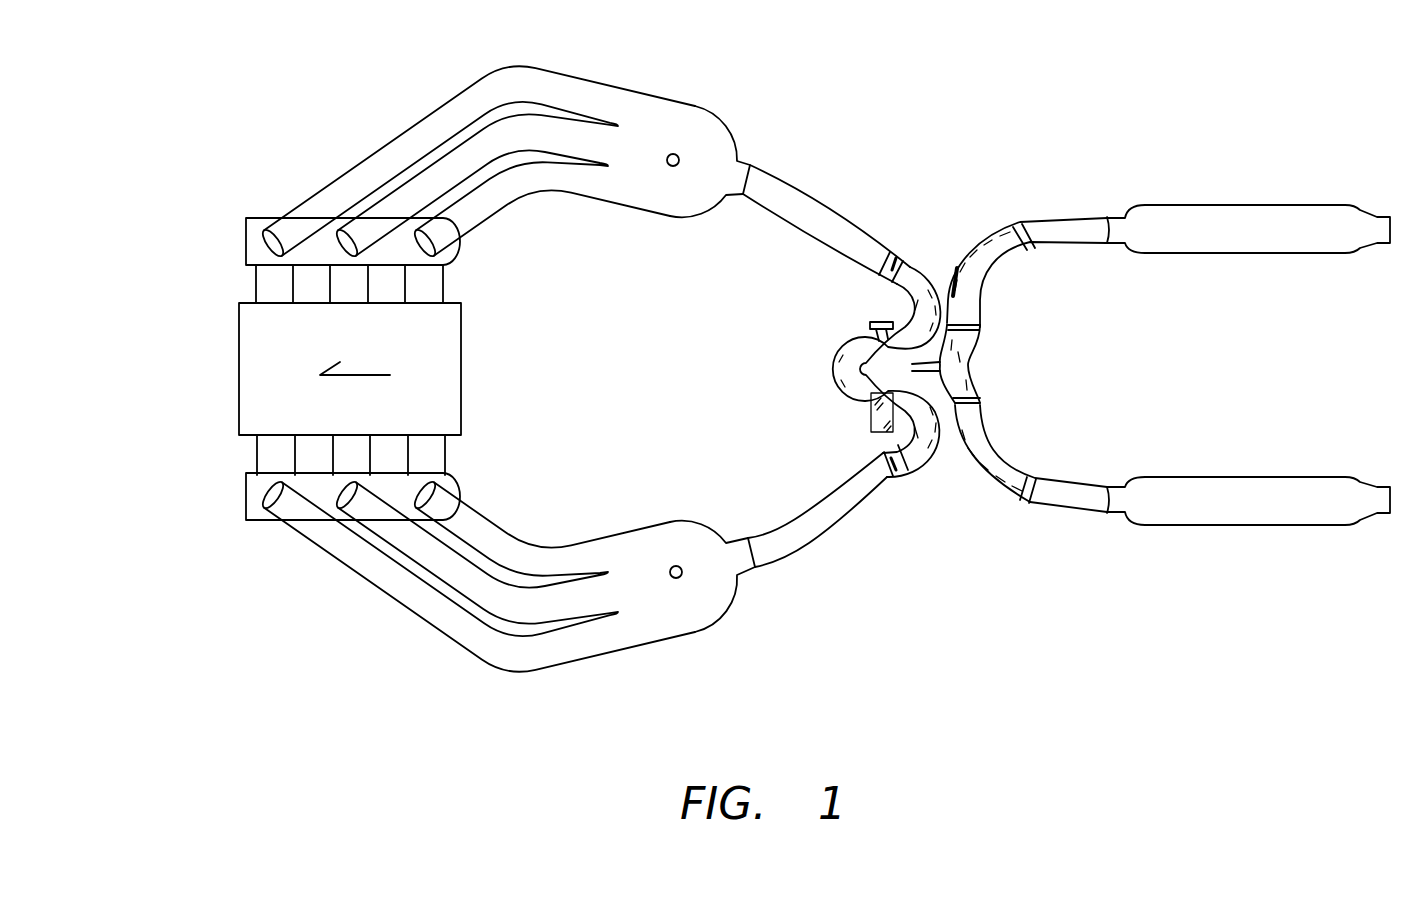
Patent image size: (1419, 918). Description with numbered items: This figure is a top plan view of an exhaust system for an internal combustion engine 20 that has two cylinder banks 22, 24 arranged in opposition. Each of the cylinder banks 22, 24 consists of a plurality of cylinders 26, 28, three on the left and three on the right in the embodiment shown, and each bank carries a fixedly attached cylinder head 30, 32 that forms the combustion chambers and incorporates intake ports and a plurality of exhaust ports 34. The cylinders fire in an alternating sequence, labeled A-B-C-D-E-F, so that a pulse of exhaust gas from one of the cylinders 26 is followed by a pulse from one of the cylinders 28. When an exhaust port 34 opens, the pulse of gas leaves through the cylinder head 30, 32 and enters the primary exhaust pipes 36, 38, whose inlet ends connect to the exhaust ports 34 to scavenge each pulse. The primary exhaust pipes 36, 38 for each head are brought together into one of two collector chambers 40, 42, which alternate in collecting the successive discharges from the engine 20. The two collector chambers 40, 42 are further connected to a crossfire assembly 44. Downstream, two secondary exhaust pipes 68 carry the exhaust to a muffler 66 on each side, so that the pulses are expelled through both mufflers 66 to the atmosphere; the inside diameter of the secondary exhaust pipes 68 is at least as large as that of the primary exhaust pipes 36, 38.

The internal combustion engine 20 is at (236, 366).
The cylinder bank 22 is at (240, 289).
The cylinder bank 24 is at (245, 457).
The cylinders 26 is at (445, 280).
The cylinders 28 is at (447, 457).
The cylinder head 30 is at (250, 217).
The cylinder head 32 is at (250, 518).
The exhaust ports 34 is at (285, 504).
The primary exhaust pipes 36 is at (390, 577).
The primary exhaust pipes 38 is at (400, 143).
The collector chamber 40 is at (683, 574).
The collector chamber 42 is at (673, 154).
The crossfire assembly 44 is at (940, 283).
The muffler 66 is at (1282, 525).
The secondary exhaust pipes 68 is at (952, 447).